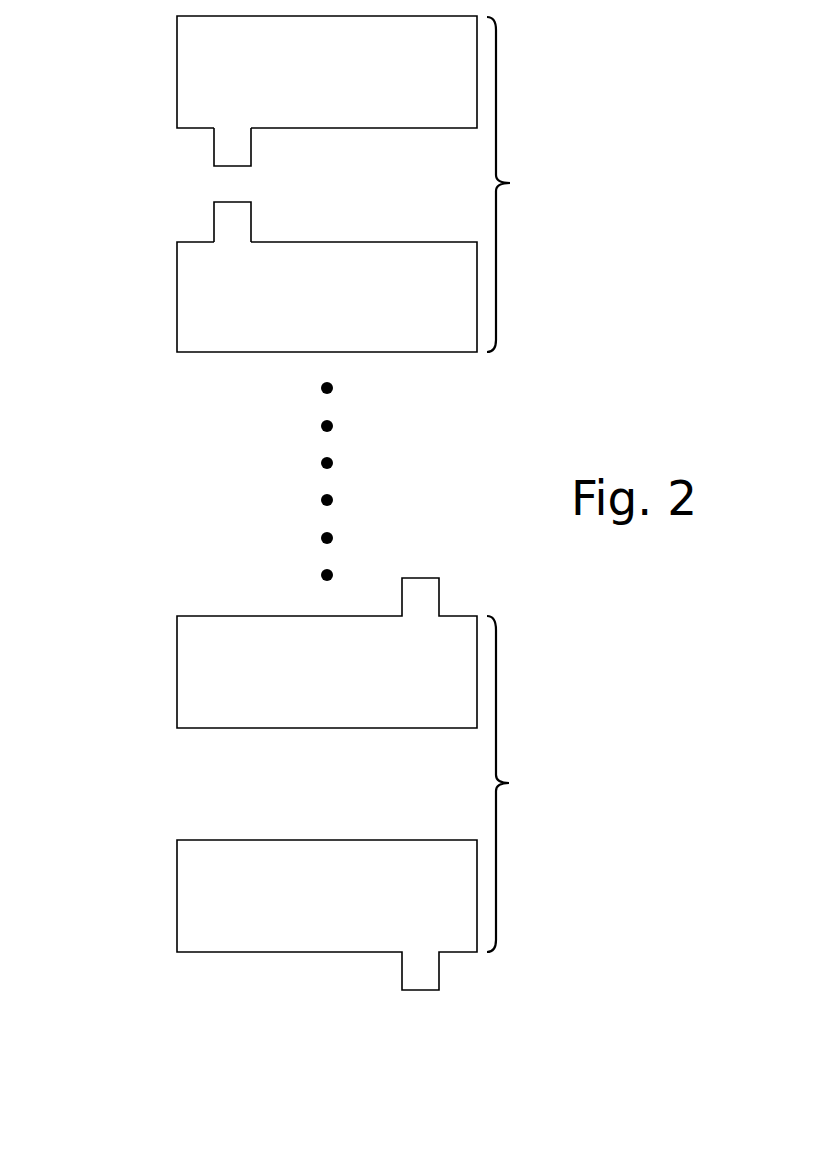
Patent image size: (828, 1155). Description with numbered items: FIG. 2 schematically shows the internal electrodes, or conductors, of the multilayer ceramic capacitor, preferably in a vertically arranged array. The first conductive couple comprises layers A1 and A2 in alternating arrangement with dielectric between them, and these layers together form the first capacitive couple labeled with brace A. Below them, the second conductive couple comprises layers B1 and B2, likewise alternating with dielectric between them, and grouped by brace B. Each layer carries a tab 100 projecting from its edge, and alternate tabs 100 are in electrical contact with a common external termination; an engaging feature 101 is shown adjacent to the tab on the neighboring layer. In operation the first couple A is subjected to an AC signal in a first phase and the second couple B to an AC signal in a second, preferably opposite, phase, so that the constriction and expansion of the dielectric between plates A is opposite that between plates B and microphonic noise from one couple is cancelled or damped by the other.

The tab 100 is at (227, 147).
The protrusion (male engagement portion) of module A2 101 is at (228, 224).
The layer A1 is at (327, 72).
The layer A2 is at (327, 297).
The first phase A is at (515, 184).
The layer B1 is at (327, 653).
The layer B2 is at (327, 915).
The second phase B is at (512, 784).